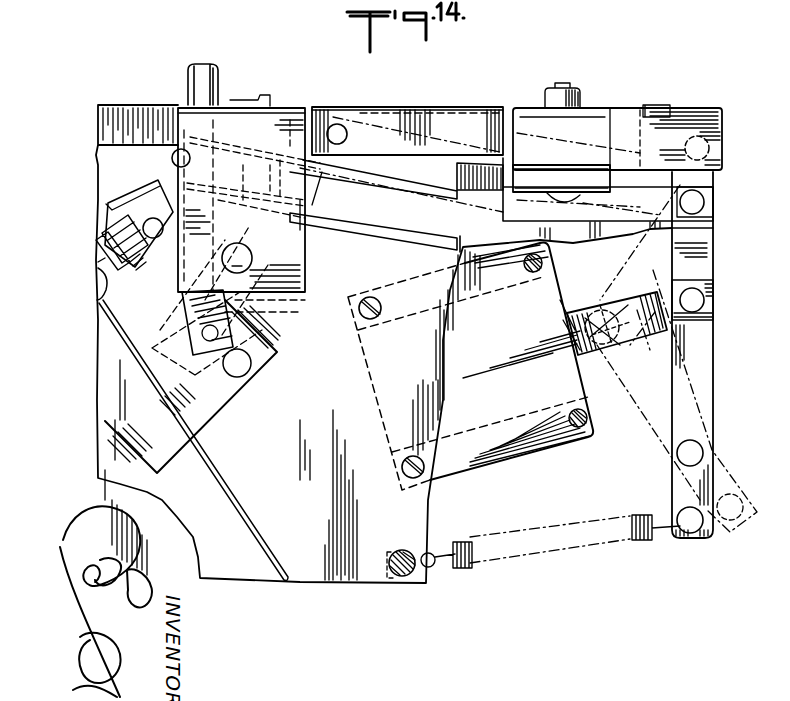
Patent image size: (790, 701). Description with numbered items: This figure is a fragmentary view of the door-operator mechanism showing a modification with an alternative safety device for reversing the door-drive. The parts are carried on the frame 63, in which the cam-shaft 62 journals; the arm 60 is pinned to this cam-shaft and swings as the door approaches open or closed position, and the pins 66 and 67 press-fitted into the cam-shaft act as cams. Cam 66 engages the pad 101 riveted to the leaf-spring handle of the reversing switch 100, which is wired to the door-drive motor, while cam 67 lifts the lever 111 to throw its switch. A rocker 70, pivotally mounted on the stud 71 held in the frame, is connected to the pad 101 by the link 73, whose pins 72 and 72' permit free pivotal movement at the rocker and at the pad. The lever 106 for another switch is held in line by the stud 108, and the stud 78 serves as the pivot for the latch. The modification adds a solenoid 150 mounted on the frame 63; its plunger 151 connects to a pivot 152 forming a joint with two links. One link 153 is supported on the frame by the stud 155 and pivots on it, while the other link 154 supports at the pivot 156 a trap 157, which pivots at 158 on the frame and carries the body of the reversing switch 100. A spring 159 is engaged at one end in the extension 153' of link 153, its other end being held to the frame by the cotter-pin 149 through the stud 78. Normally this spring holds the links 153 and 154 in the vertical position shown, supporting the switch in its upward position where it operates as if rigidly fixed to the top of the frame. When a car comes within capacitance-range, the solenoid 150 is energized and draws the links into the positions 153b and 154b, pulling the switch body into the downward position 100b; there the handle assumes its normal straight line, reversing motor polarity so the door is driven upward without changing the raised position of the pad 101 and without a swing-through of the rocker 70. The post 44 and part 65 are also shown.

The post 44 is at (218, 90).
The arm 60 is at (250, 310).
The cam-shaft 62 is at (237, 258).
The frame 63 is at (322, 580).
The bolt 65 is at (132, 251).
The pin (cam) 66 is at (303, 230).
The pin (cam) 67 is at (249, 200).
The rocker 70 is at (200, 436).
The stud 71 is at (238, 372).
The pin 72 is at (208, 143).
The pin 72' is at (241, 322).
The link 73 is at (168, 206).
The stud 78 is at (406, 551).
The reversing switch 100 is at (456, 190).
The downward position of switch body 100b is at (578, 251).
The pad 101 is at (320, 178).
The lever 106 is at (120, 345).
The stud 108 is at (120, 289).
The lever 111 is at (383, 218).
The cotter-pin 149 is at (433, 553).
The solenoid 150 is at (499, 455).
The plunger 151 is at (634, 343).
The pivot 152 is at (700, 300).
The link 153 is at (715, 355).
The extension of link 153 153' is at (710, 539).
The drawn position of link 153 153b is at (662, 444).
The link 154 is at (713, 258).
The drawn position of link 154 154b is at (600, 308).
The stud 155 is at (704, 453).
The pivot 156 is at (716, 151).
The trap 157 is at (680, 118).
The pivot 158 is at (341, 124).
The spring 159 is at (513, 536).